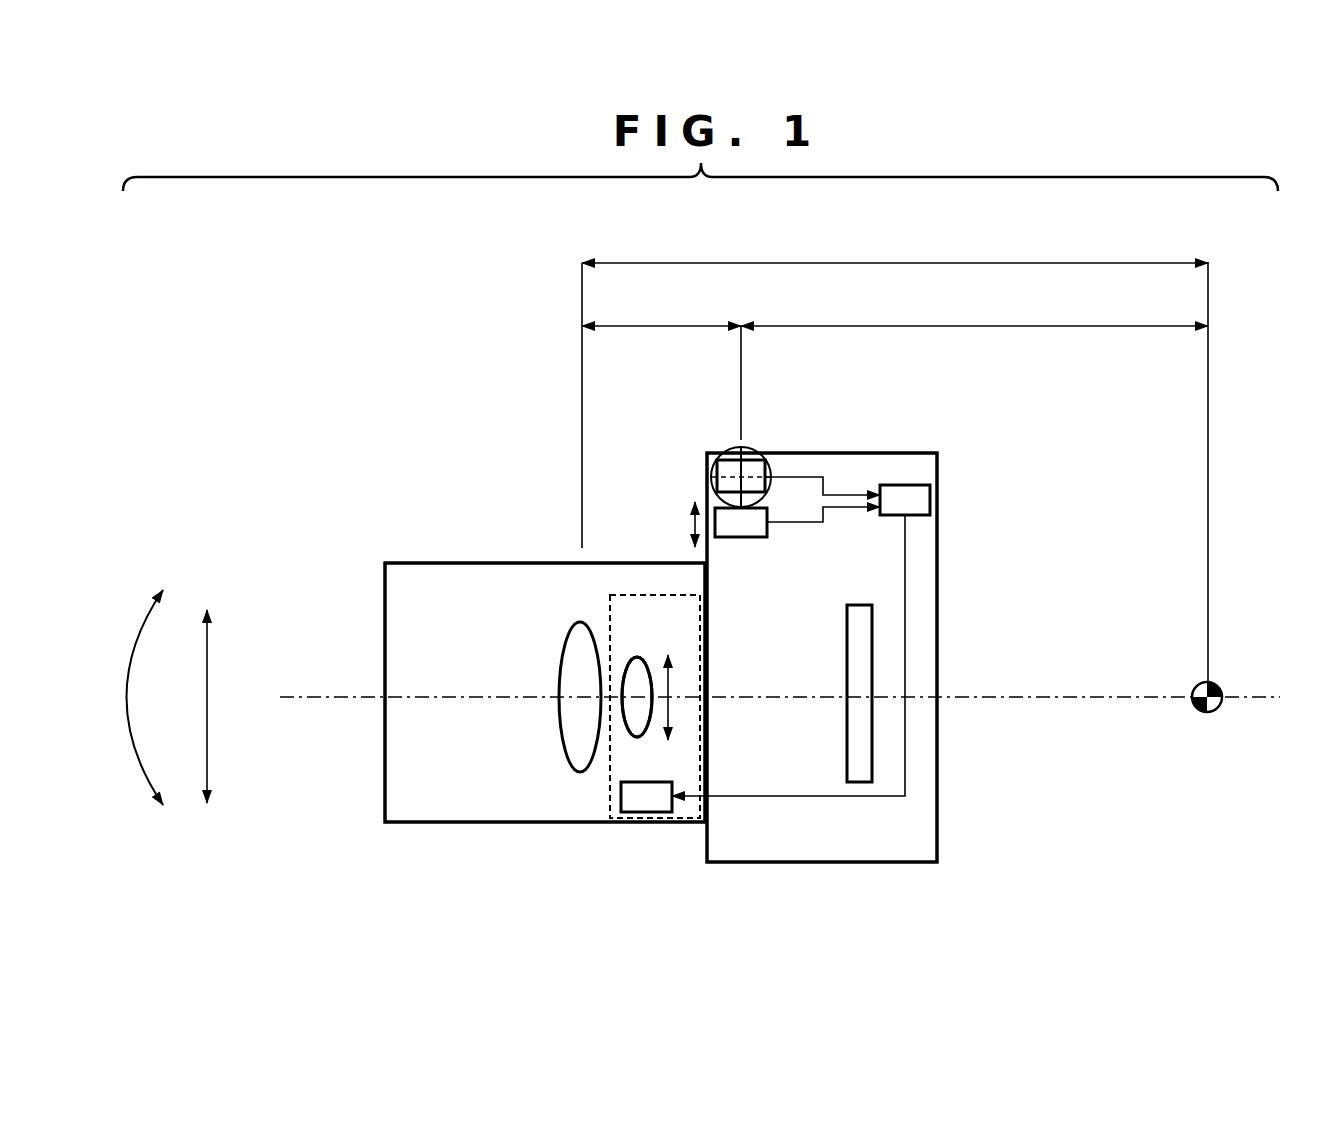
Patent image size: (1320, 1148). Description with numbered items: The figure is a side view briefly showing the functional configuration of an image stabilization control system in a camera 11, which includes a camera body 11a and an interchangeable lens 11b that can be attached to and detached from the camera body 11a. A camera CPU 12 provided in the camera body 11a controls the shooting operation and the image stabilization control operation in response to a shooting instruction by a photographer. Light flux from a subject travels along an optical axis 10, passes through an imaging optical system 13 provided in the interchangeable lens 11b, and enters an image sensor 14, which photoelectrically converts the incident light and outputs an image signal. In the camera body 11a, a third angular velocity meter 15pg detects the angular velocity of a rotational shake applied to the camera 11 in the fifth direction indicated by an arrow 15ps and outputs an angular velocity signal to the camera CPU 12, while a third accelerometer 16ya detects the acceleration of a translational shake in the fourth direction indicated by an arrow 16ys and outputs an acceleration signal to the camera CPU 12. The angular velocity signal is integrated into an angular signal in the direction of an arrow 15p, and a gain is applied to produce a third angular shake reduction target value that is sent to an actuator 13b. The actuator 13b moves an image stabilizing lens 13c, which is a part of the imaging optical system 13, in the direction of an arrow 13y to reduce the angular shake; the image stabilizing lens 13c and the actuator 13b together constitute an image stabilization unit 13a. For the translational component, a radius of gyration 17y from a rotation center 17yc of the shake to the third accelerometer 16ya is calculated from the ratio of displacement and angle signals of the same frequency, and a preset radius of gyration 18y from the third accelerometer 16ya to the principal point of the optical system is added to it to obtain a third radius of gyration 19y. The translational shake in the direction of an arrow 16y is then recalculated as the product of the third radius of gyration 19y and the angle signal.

The optical axis 10 is at (320, 700).
The camera 11 is at (458, 438).
The camera body 11a is at (920, 453).
The interchangeable lens 11b is at (427, 563).
The camera CPU 12 is at (930, 495).
The imaging optical system 13 is at (673, 590).
The image stabilization unit 13a is at (611, 786).
The actuator 13b is at (664, 813).
The image stabilizing lens 13c is at (647, 725).
The arrow 13y is at (668, 655).
The image sensor 14 is at (872, 757).
The arrow 15p is at (162, 590).
The third angular velocity meter 15pg is at (707, 485).
The arrow 15ps is at (790, 418).
The arrow 16y is at (208, 610).
The third accelerometer 16ya is at (745, 538).
The arrow 16ys is at (690, 524).
The radius of gyration 17y is at (953, 328).
The rotation center 17yc is at (1196, 710).
The preset radius of gyration 18y is at (620, 328).
The third radius of gyration 19y is at (953, 265).